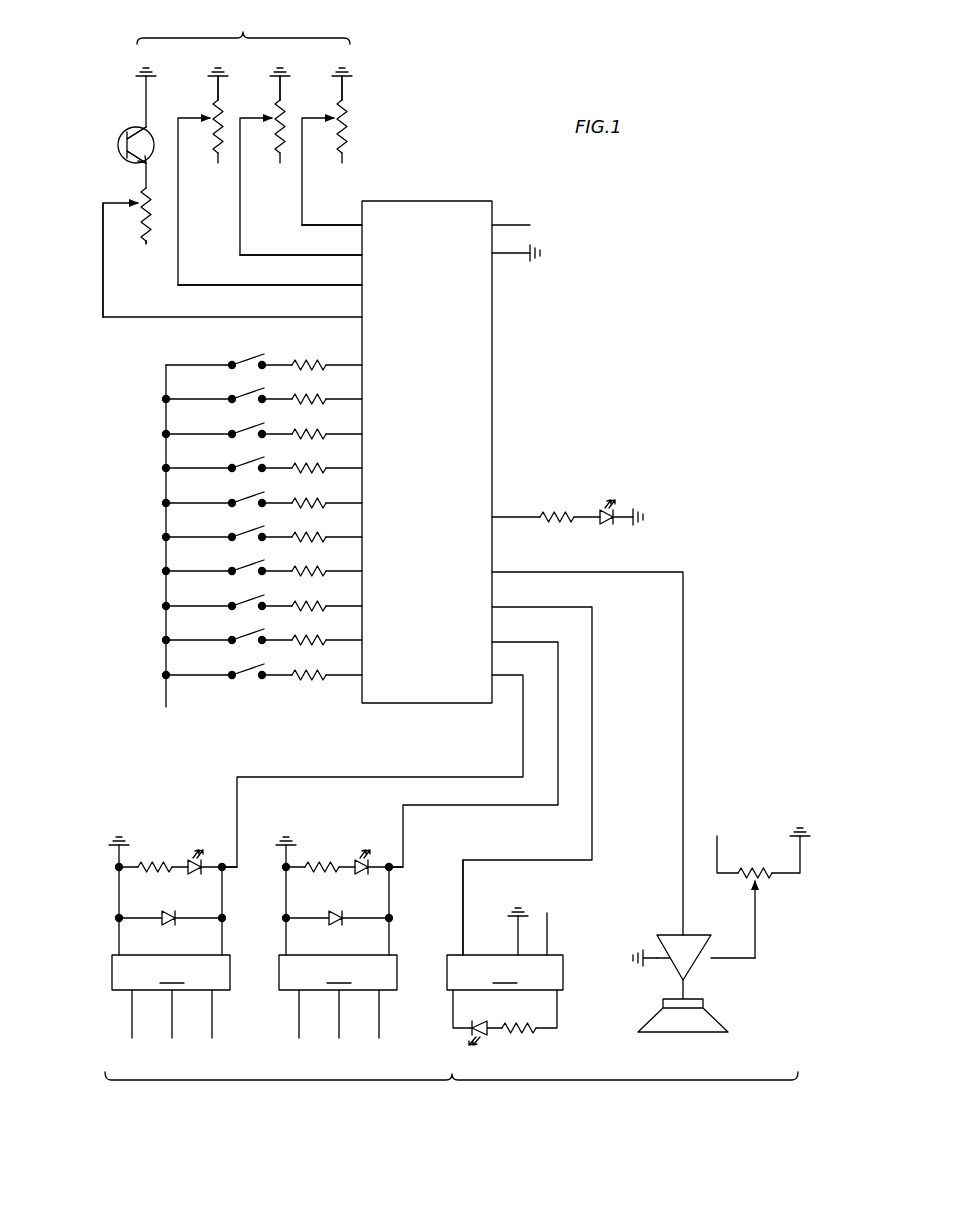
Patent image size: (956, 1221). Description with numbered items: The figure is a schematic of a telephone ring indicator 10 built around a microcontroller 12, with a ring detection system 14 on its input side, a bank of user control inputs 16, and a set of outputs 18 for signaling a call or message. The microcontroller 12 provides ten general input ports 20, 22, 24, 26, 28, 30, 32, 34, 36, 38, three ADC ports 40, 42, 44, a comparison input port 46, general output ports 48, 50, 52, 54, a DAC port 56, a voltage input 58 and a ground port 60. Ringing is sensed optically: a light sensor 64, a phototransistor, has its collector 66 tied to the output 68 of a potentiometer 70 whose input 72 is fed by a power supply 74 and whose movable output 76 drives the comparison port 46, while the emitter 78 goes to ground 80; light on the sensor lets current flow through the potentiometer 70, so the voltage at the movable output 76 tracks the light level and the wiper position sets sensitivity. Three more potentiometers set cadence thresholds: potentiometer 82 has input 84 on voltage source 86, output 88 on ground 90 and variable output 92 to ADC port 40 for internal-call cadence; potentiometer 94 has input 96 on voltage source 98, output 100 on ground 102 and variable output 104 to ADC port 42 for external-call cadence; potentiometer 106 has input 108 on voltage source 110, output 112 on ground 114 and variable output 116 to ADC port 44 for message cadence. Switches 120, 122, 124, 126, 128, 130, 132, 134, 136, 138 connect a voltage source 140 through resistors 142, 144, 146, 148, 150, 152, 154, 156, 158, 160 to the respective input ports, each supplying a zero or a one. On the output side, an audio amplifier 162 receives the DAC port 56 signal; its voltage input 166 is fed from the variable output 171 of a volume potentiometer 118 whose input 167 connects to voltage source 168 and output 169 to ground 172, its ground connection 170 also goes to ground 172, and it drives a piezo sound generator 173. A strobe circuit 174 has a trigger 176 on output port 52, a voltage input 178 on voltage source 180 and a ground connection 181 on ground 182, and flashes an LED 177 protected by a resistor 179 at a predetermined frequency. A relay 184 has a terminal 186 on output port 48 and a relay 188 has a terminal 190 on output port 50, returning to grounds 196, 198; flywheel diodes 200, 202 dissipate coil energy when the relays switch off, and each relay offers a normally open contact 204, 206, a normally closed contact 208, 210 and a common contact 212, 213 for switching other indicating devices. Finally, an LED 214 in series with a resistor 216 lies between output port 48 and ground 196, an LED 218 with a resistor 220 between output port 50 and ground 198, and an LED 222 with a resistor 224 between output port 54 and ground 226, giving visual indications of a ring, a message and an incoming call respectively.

The telephone ring indicator 10 is at (626, 278).
The microcontroller 12 is at (493, 420).
The ring detection system 14 is at (243, 25).
The control inputs 16 is at (140, 512).
The outputs 18 is at (451, 1091).
The general input port 20 is at (394, 676).
The general input port 22 is at (394, 641).
The general input port 24 is at (394, 607).
The general input port 26 is at (394, 572).
The general input port 28 is at (394, 538).
The general input port 30 is at (394, 504).
The general input port 32 is at (394, 469).
The general input port 34 is at (394, 435).
The general input port 36 is at (394, 400).
The general input port 38 is at (399, 366).
The ADC port 40 is at (405, 227).
The ADC port 42 is at (405, 257).
The ADC port 44 is at (405, 287).
The comparison input port 46 is at (418, 319).
The general output port 48 is at (495, 674).
The general output port 50 is at (495, 639).
The general output port 52 is at (495, 606).
The general output port 54 is at (495, 518).
The DAC port 56 is at (495, 573).
The voltage input 58 is at (495, 222).
The ground port 60 is at (495, 255).
The light sensor 64 is at (114, 139).
The collector 66 is at (141, 164).
The potentiometer output 68 is at (138, 190).
The potentiometer 70 is at (148, 205).
The potentiometer input 72 is at (146, 235).
The power supply 74 is at (144, 276).
The movable output 76 is at (103, 262).
The emitter 78 is at (145, 129).
The ground 80 is at (136, 72).
The potentiometer 82 is at (336, 137).
The potentiometer input 84 is at (340, 156).
The voltage source 86 is at (341, 190).
The potentiometer output 88 is at (336, 80).
The ground 90 is at (336, 68).
The variable output 92 is at (308, 116).
The potentiometer 94 is at (275, 137).
The potentiometer input 96 is at (276, 156).
The voltage source 98 is at (280, 190).
The potentiometer output 100 is at (274, 80).
The ground 102 is at (274, 68).
The variable output 104 is at (246, 116).
The potentiometer 106 is at (214, 145).
The potentiometer input 108 is at (215, 156).
The voltage source 110 is at (217, 190).
The potentiometer output 112 is at (212, 80).
The ground 114 is at (212, 68).
The variable output 116 is at (182, 116).
The potentiometer 118 is at (766, 870).
The switch 120 is at (246, 667).
The switch 122 is at (246, 632).
The switch 124 is at (246, 598).
The switch 126 is at (246, 563).
The switch 128 is at (246, 529).
The switch 130 is at (246, 495).
The switch 132 is at (246, 460).
The switch 134 is at (246, 426).
The switch 136 is at (246, 391).
The switch 138 is at (246, 357).
The voltage source 140 is at (156, 735).
The resistor 142 is at (307, 674).
The resistor 144 is at (307, 639).
The resistor 146 is at (307, 605).
The resistor 148 is at (307, 570).
The resistor 150 is at (307, 536).
The resistor 152 is at (307, 502).
The resistor 154 is at (307, 467).
The resistor 156 is at (307, 433).
The resistor 158 is at (307, 398).
The resistor 160 is at (307, 364).
The audio amplifier 162 is at (676, 936).
The voltage input 166 is at (742, 960).
The potentiometer input 167 is at (739, 876).
The voltage source 168 is at (725, 806).
The potentiometer output 169 is at (778, 878).
The ground connection 170 is at (672, 964).
The variable output 171 is at (760, 933).
The ground 172 is at (640, 960).
The piezo sound generator 173 is at (682, 1032).
The strobe circuit 174 is at (505, 972).
The trigger 176 is at (462, 917).
The LED 177 is at (482, 1020).
The voltage input 178 is at (550, 952).
The resistor 179 is at (524, 1032).
The voltage source 180 is at (564, 898).
The ground connection 181 is at (516, 950).
The ground 182 is at (515, 907).
The relay 184 is at (171, 972).
The terminal 186 is at (221, 950).
The relay 188 is at (338, 972).
The terminal 190 is at (388, 950).
The ground 196 is at (115, 838).
The ground 198 is at (282, 838).
The flywheel diode 200 is at (163, 912).
The flywheel diode 202 is at (330, 912).
The normally open contact 204 is at (212, 1018).
The normally open contact 206 is at (379, 1018).
The normally closed contact 208 is at (132, 1018).
The normally closed contact 210 is at (299, 1018).
The common contact 212 is at (172, 1018).
The common contact 213 is at (339, 1018).
The LED 214 is at (198, 875).
The resistor 216 is at (150, 862).
The LED 218 is at (365, 875).
The resistor 220 is at (317, 862).
The LED 222 is at (608, 522).
The resistor 224 is at (560, 513).
The ground 226 is at (648, 510).